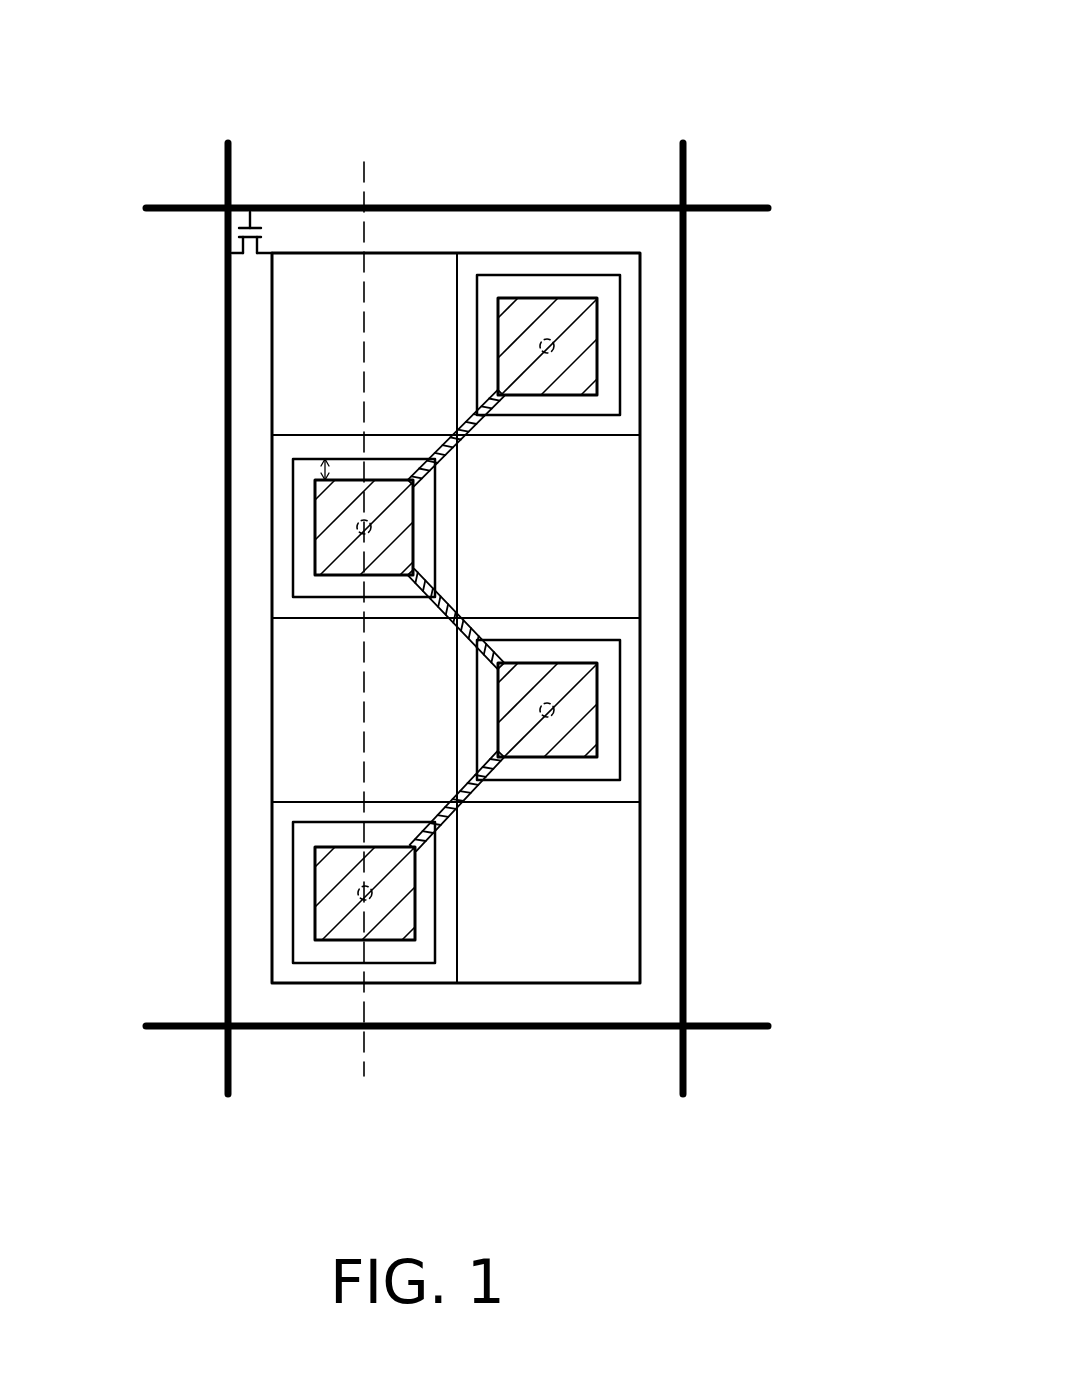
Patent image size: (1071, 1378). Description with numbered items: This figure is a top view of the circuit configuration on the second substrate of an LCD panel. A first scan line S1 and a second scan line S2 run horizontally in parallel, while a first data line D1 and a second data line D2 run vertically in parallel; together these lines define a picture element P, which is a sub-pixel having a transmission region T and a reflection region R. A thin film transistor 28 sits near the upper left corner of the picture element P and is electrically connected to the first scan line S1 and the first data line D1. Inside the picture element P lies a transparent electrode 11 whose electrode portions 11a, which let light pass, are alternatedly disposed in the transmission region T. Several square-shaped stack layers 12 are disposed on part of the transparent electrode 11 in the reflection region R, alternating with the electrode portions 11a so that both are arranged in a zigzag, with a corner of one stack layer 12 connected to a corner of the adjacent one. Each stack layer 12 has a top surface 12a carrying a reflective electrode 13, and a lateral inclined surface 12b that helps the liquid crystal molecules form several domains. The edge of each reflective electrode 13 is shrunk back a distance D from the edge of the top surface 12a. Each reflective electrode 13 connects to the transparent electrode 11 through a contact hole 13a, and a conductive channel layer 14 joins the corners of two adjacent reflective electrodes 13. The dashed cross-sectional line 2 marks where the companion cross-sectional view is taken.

The transparent electrode 11 is at (271, 365).
The electrode portions 11a is at (297, 308).
The stack layer 12 is at (605, 619).
The top surface 12a is at (608, 385).
The lateral inclined surface 12b is at (630, 428).
The reflective electrode 13 is at (590, 312).
The contact hole 13a is at (558, 343).
The conductive channel layer 14 is at (457, 437).
The thin film transistor 28 is at (238, 245).
The distance D is at (325, 460).
The transmission region T is at (416, 291).
The reflection region R is at (548, 297).
The picture element P is at (637, 238).
The first data line D1 is at (233, 597).
The second data line D2 is at (688, 599).
The first scan line S1 is at (432, 217).
The second scan line S2 is at (431, 1032).
The cross-sectional line 2 is at (360, 160).